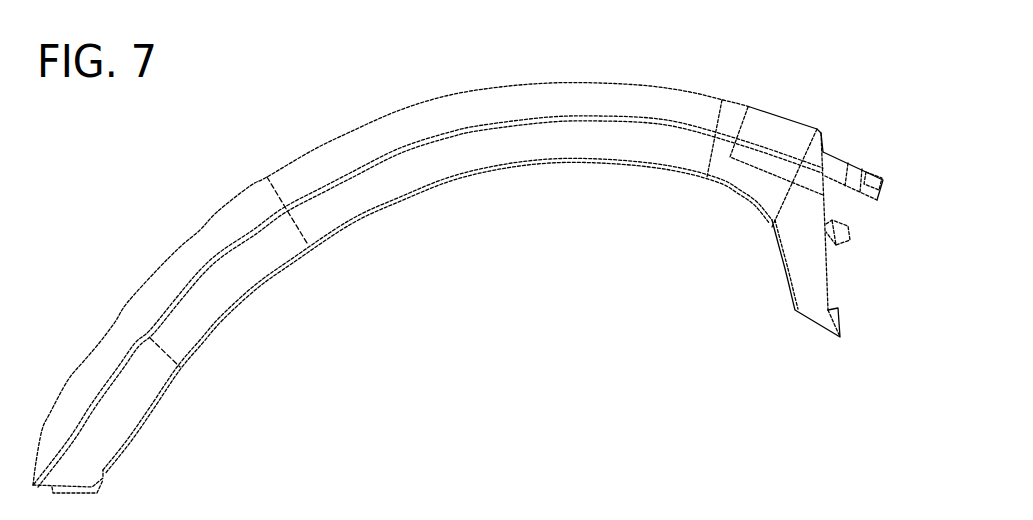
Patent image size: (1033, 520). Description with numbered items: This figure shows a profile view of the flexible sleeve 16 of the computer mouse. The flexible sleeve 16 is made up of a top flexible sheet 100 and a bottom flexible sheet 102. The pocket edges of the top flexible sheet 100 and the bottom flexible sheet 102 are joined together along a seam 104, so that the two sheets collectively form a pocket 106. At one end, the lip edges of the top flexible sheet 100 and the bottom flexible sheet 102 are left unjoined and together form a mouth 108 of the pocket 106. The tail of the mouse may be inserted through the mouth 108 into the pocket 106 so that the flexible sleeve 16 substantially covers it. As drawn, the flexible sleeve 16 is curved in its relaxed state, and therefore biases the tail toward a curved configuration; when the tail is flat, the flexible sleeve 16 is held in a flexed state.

The flexible sleeve 16 is at (312, 150).
The top flexible sheet 100 is at (585, 84).
The bottom flexible sheet 102 is at (585, 165).
The seam 104 is at (478, 125).
The pocket 106 is at (390, 66).
The mouth 108 is at (826, 148).